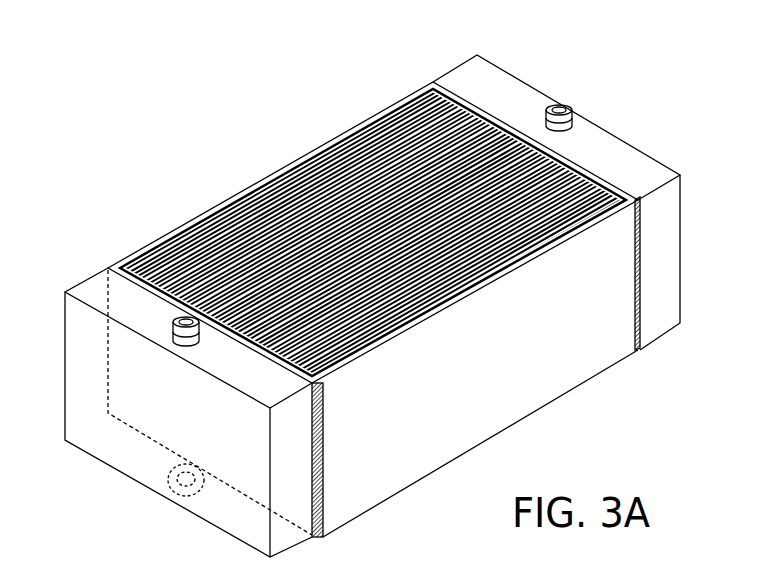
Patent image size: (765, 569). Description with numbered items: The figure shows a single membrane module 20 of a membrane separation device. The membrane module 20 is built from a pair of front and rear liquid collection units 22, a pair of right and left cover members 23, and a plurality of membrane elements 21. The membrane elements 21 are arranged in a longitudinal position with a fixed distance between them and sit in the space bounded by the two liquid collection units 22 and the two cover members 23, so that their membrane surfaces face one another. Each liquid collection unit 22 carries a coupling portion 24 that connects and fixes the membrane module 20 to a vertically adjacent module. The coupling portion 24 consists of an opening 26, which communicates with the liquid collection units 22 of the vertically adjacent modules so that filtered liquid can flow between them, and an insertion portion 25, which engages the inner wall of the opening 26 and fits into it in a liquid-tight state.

The membrane module 20 is at (180, 78).
The membrane element 21 is at (360, 123).
The liquid collection unit 22 is at (465, 72).
The cover member 23 is at (227, 200).
The coupling portion 24 is at (358, 276).
The insertion portion 25 is at (560, 107).
The opening 26 is at (170, 483).